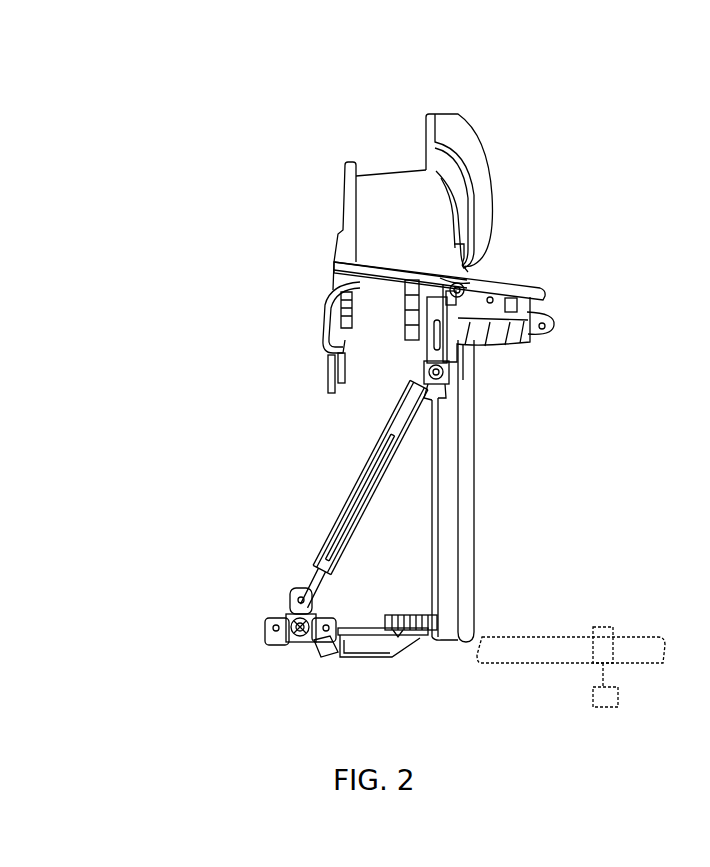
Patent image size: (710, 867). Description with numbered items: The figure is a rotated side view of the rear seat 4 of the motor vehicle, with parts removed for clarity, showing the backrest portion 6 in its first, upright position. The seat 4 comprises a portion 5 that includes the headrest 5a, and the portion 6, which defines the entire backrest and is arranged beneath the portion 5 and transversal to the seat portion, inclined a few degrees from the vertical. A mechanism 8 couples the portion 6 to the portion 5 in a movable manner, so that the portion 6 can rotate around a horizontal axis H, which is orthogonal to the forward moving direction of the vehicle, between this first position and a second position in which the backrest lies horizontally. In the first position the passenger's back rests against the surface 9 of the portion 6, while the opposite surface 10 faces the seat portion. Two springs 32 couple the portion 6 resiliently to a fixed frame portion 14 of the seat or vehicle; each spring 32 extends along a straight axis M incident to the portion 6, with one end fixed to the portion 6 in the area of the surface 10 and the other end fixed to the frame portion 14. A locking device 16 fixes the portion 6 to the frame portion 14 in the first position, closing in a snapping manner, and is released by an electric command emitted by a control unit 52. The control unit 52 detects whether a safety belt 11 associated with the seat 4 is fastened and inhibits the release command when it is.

The seat 4 is at (559, 628).
The portion 5 is at (372, 164).
The headrest 5a is at (470, 130).
The portion 6 is at (470, 537).
The mechanism 8 is at (463, 268).
The surface 9 is at (482, 431).
The surface 10 is at (430, 516).
The safety belt 11 is at (610, 618).
The frame portion 14 is at (360, 630).
The locking device 16 is at (430, 612).
The springs 32 is at (400, 427).
The control unit 52 is at (620, 694).
The axis H is at (452, 278).
The axes M is at (293, 642).